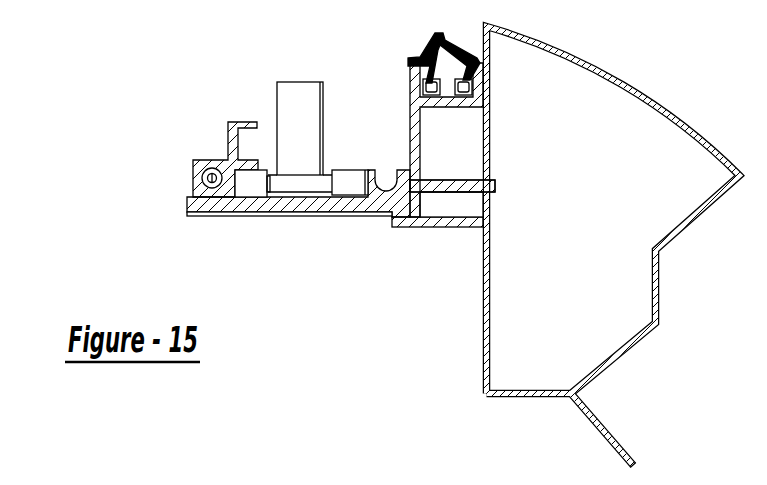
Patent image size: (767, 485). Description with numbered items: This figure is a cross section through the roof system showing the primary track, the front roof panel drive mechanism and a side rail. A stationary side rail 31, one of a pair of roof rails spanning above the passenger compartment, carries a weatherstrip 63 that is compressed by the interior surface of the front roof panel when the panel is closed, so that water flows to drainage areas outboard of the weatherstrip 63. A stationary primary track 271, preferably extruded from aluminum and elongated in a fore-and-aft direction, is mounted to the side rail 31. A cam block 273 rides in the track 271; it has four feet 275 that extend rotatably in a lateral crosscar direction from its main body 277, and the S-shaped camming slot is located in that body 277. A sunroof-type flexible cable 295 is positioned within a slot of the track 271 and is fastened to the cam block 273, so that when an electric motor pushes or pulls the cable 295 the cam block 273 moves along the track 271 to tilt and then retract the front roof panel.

The side rail 31 is at (642, 92).
The weatherstrip 63 is at (430, 57).
The primary track 271 is at (370, 208).
The cam block 273 is at (300, 90).
The feet 275 is at (352, 178).
The main body 277 is at (293, 185).
The cable 295 is at (212, 168).